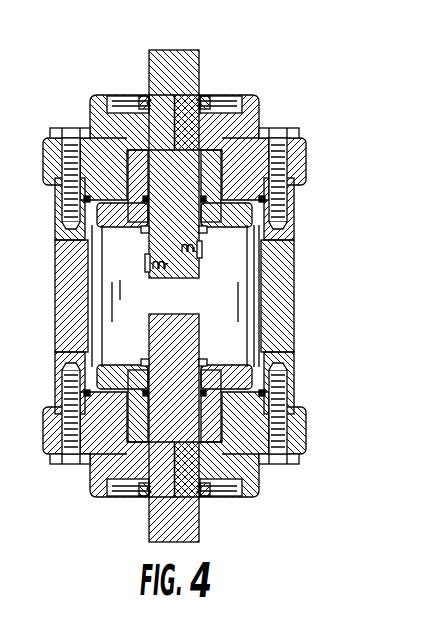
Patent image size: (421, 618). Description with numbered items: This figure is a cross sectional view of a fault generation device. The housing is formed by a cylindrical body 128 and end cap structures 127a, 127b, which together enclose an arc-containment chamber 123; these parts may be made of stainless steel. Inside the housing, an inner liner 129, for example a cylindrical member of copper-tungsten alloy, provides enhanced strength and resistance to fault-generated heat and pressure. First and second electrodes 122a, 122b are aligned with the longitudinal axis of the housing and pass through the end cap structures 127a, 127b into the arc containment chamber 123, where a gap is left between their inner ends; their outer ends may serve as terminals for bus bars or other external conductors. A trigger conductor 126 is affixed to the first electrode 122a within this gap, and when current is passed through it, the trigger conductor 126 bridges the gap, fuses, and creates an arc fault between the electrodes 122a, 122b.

The first electrode 122a is at (174, 70).
The second electrode 122b is at (186, 527).
The arc-containment chamber 123 is at (214, 323).
The trigger conductor 126 is at (172, 278).
The first end cap structure 127a is at (258, 124).
The second end cap structure 127b is at (254, 476).
The cylindrical body 128 is at (294, 251).
The inner liner 129 is at (268, 299).